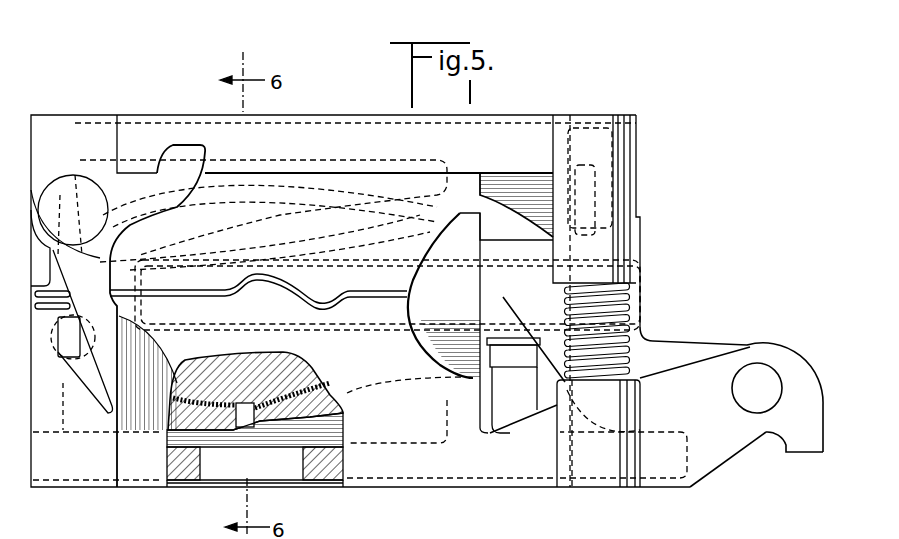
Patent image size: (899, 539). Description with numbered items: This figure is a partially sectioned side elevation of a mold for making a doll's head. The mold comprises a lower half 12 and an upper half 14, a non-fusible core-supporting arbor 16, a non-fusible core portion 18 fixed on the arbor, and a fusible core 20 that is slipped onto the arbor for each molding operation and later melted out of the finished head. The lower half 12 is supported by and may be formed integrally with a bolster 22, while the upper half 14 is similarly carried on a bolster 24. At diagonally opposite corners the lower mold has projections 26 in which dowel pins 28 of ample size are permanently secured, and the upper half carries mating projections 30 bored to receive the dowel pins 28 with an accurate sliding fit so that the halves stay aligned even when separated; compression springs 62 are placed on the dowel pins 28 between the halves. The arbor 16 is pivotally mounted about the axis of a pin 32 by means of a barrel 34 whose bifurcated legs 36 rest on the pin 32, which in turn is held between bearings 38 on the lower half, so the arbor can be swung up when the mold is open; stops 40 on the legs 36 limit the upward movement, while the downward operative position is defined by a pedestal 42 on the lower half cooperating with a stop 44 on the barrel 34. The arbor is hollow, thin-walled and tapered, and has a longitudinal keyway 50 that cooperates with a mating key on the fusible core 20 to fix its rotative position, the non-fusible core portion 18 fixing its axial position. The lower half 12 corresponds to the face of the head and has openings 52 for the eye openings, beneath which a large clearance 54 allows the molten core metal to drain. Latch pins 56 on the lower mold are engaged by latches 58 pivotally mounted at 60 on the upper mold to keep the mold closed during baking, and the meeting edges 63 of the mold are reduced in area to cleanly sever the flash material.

The lower half 12 is at (207, 425).
The upper half 14 is at (262, 180).
The core-supporting arbor 16 is at (328, 245).
The non-fusible core portion 18 is at (458, 237).
The fusible core 20 is at (292, 205).
The bolster 22 is at (453, 466).
The bolster 24 is at (97, 142).
The projections 26 is at (608, 478).
The dowel pins 28 is at (603, 190).
The mating projections 30 is at (630, 140).
The pin 32 is at (757, 395).
The barrel 34 is at (493, 242).
The legs 36 is at (667, 353).
The bearings 38 is at (718, 445).
The stops 40 is at (803, 443).
The pedestal 42 is at (510, 397).
The stop 44 is at (507, 355).
The keyway 50 is at (196, 272).
The openings 52 is at (247, 422).
The clearance 54 is at (280, 462).
The latch pins 56 is at (57, 345).
The latches 58 is at (77, 275).
The pivot 60 is at (62, 207).
The compression springs 62 is at (42, 288).
The meeting edges 63 is at (320, 288).